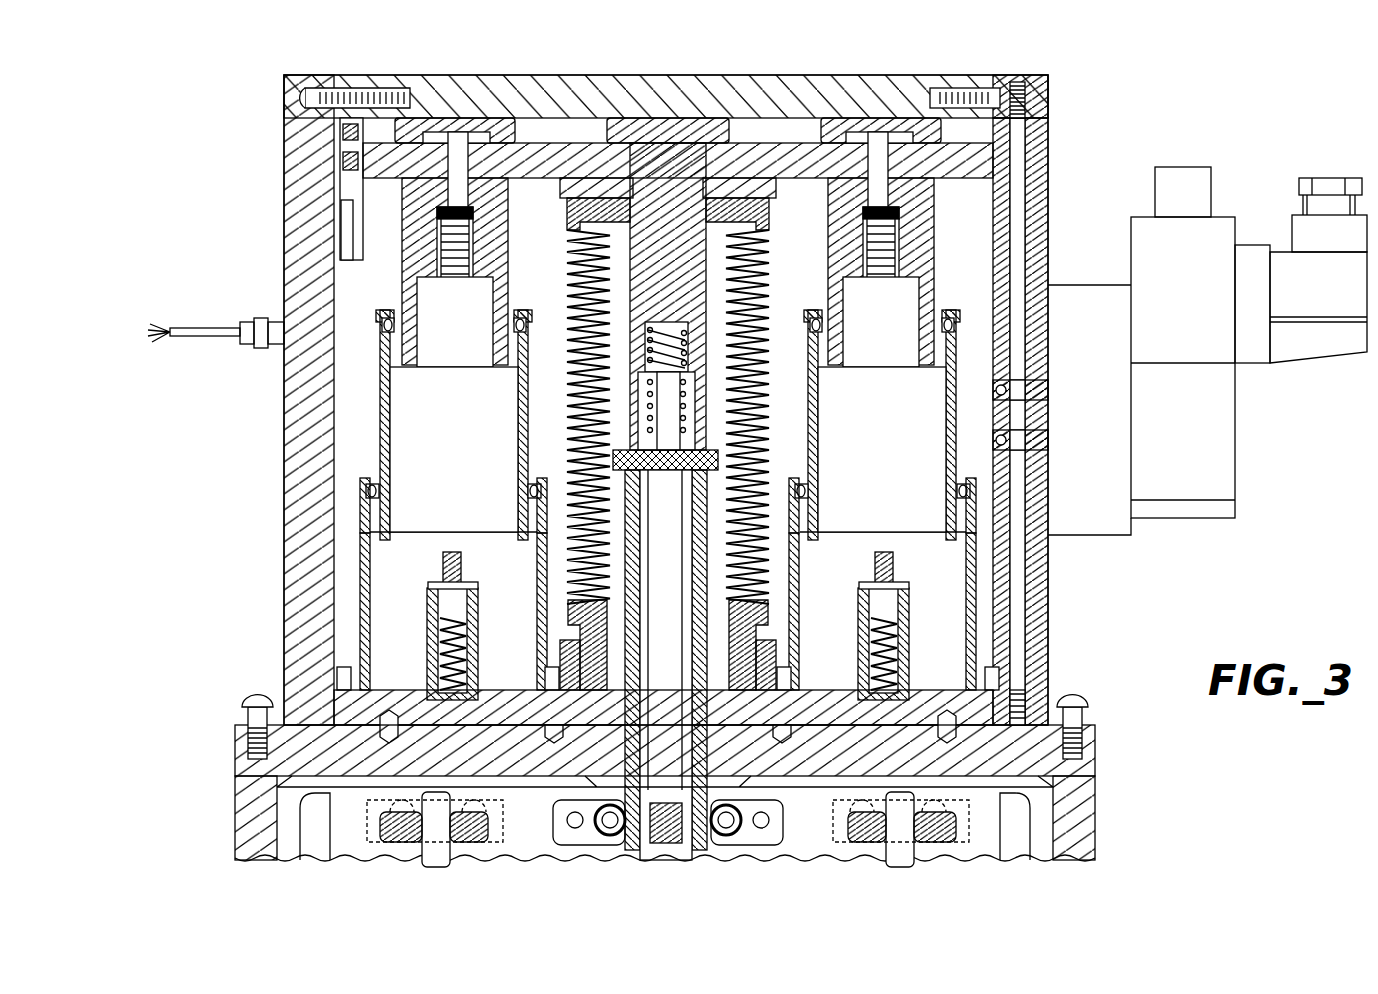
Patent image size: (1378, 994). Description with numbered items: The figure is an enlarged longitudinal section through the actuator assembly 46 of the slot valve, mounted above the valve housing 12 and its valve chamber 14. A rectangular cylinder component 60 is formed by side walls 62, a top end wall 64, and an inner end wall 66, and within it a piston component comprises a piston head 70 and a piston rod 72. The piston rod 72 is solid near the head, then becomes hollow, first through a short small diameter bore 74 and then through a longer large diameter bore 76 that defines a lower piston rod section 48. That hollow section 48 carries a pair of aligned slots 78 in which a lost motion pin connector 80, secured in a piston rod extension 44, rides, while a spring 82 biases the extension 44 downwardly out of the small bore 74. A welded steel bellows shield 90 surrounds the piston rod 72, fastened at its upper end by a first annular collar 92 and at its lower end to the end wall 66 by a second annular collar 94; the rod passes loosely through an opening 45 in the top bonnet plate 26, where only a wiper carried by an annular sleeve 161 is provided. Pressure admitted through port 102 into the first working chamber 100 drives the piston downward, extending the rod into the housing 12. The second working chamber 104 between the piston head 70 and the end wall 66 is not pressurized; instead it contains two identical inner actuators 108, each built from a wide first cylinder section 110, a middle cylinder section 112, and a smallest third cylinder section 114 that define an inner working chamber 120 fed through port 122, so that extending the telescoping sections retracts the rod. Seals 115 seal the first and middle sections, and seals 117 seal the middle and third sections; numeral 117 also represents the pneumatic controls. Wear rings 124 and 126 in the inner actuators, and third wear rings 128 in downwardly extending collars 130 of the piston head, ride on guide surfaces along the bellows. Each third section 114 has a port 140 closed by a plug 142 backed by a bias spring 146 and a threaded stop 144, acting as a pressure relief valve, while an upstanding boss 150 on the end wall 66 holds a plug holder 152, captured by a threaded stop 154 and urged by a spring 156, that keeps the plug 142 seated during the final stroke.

The actuator assembly 46 is at (228, 125).
The first working chamber 100 is at (430, 118).
The port 140 is at (468, 130).
The bias spring 146 is at (480, 130).
The piston rod 72 is at (690, 120).
The piston head 70 is at (790, 160).
The top end wall 64 is at (860, 120).
The cylinder component 60 is at (300, 515).
The side walls 62 is at (285, 255).
The downwardly extending collars 130 is at (340, 220).
The third wear rings 128 is at (340, 245).
The third cylinder section 114 is at (340, 302).
The plug 142 is at (440, 260).
The threaded stop 144 is at (470, 288).
The seals 117 is at (1255, 413).
The wear ring 126 is at (505, 355).
The second working chamber 104 is at (355, 398).
The middle cylinder section 112 is at (378, 440).
The inner working chamber 120 is at (420, 470).
The seals 115 is at (520, 485).
The wear ring 124 is at (522, 520).
The first cylinder section 110 is at (420, 630).
The inner actuators 108 is at (355, 590).
The upstanding boss 150 is at (482, 600).
The plug holder 152 is at (430, 575).
The threaded stop 154 is at (436, 595).
The spring 156 is at (438, 650).
The annular sleeve 161 is at (547, 652).
The port 102 is at (1050, 266).
The first annular collar 92 is at (762, 212).
The bellows shield 90 is at (585, 312).
The small diameter bore 74 is at (690, 335).
The spring 82 is at (645, 335).
The aligned slots 78 is at (640, 405).
The lost motion pin connector 80 is at (700, 455).
The large diameter bore 76 is at (710, 475).
The piston rod extension 44 is at (760, 575).
The lower piston rod section 48 is at (740, 598).
The second annular collar 94 is at (770, 642).
The opening 45 is at (735, 650).
The port 122 is at (1050, 662).
The inner end wall 66 is at (1050, 698).
The valve housing 12 is at (245, 770).
The top bonnet plate 26 is at (1085, 755).
The valve chamber 14 is at (280, 828).